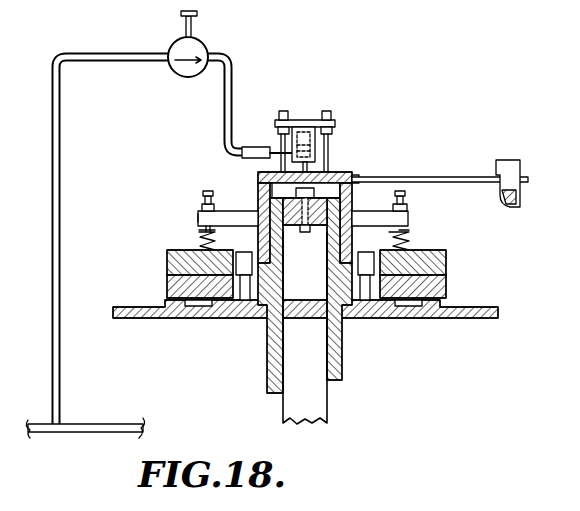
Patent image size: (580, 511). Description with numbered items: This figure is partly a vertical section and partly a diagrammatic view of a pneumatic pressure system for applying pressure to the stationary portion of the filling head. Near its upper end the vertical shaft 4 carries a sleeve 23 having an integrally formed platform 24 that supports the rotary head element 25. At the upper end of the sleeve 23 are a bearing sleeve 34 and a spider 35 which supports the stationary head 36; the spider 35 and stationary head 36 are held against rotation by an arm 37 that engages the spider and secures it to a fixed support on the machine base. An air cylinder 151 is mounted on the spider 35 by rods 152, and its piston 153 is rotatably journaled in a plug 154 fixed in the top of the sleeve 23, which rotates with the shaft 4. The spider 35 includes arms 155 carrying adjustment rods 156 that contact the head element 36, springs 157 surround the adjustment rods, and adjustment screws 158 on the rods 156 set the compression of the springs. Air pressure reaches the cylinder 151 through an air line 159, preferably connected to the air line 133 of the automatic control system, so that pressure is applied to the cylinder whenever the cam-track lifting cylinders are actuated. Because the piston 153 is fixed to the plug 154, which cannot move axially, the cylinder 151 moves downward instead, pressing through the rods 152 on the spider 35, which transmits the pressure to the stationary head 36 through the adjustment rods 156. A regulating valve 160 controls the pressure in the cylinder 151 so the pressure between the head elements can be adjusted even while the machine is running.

The shaft 4 is at (318, 418).
The sleeve 23 is at (343, 350).
The platform 24 is at (418, 308).
The rotary head element 25 is at (440, 290).
The bearing sleeve 34 is at (356, 232).
The spider 35 is at (349, 176).
The stationary head 36 is at (442, 252).
The arm 37 is at (420, 180).
The line 133 is at (100, 422).
The air cylinder 151 is at (310, 121).
The rods 152 is at (276, 130).
The piston 153 is at (266, 162).
The plug 154 is at (313, 234).
The arms 155 is at (226, 211).
The adjustment rods 156 is at (200, 200).
The springs 157 is at (200, 236).
The adjustment screws 158 is at (198, 214).
The air line 159 is at (77, 61).
The regulating valve 160 is at (204, 42).